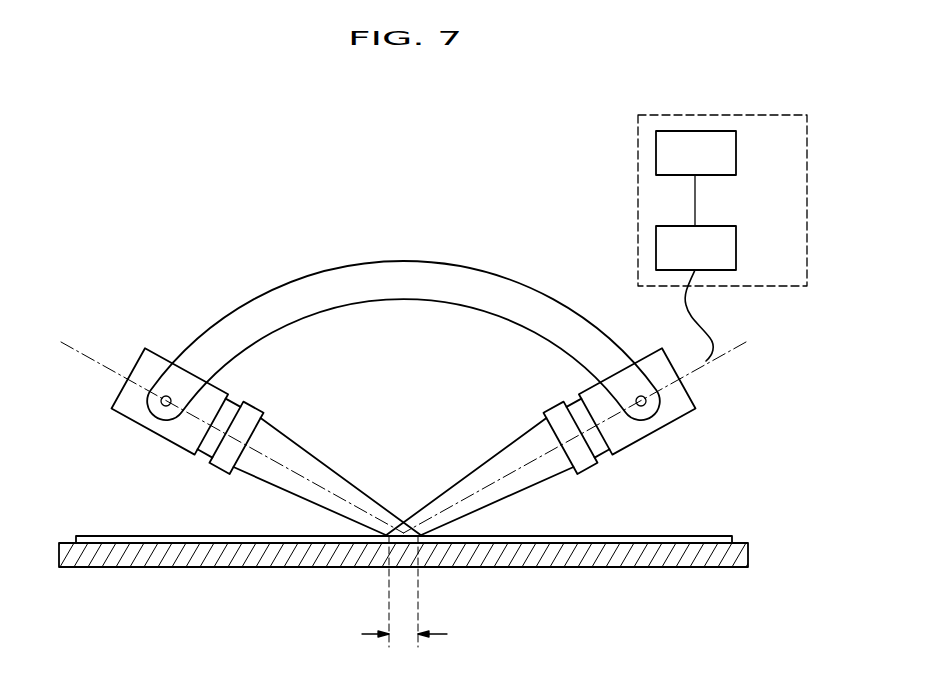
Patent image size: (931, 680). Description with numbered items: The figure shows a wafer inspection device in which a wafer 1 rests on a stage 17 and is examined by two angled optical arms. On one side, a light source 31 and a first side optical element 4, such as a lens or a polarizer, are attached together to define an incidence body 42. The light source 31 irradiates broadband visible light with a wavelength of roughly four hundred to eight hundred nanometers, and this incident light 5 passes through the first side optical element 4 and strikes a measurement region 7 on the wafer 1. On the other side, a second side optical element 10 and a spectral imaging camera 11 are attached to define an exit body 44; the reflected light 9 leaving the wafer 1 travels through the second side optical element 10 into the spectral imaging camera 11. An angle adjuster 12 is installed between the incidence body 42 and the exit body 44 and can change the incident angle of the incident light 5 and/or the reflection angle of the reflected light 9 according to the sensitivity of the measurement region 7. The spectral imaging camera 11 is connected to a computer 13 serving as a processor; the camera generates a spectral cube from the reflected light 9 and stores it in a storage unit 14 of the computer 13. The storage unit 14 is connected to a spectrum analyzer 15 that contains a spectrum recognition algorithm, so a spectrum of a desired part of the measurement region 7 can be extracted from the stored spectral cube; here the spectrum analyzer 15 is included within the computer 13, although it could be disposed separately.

The wafer 1 is at (709, 537).
The first side optical element 4 is at (253, 417).
The incident light 5 is at (312, 477).
The measurement region 7 is at (404, 592).
The reflected light 9 is at (500, 480).
The second side optical element 10 is at (555, 412).
The spectral imaging camera 11 is at (678, 402).
The angle adjuster 12 is at (403, 268).
The computer 13 is at (722, 184).
The storage unit 14 is at (736, 247).
The spectrum analyzer 15 is at (736, 152).
The stage 17 is at (738, 558).
The light source 31 is at (135, 412).
The incidence body 42 is at (267, 483).
The exit body 44 is at (543, 483).